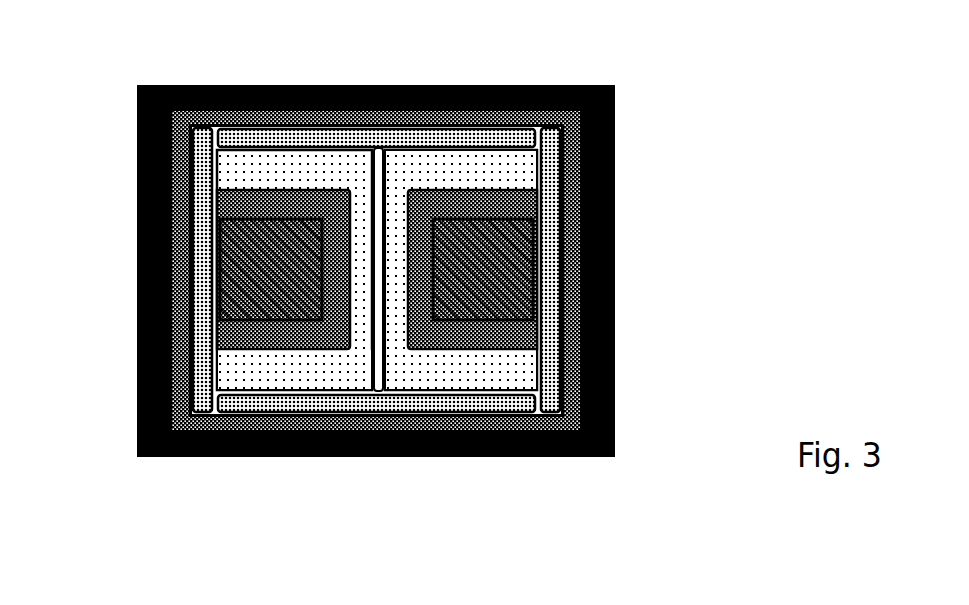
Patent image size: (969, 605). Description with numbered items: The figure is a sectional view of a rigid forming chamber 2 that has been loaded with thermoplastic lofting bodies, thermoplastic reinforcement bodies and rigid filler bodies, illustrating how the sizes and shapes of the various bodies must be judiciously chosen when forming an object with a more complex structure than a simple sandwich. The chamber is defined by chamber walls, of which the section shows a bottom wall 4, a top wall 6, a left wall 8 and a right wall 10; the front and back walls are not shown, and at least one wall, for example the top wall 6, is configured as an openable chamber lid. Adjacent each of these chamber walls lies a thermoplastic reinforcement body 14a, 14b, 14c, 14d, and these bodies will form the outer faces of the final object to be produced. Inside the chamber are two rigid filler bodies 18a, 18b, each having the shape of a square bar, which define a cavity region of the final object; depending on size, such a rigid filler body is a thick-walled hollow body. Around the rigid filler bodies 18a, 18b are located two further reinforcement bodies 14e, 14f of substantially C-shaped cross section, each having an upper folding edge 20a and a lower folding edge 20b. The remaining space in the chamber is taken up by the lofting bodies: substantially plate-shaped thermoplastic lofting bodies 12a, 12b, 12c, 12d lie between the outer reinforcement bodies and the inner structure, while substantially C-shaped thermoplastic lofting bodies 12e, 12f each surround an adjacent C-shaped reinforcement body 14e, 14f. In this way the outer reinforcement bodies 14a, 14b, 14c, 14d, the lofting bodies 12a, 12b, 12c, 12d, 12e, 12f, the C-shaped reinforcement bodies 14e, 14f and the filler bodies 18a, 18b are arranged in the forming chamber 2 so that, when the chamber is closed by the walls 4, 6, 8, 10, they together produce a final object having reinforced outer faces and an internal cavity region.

The rigid forming chamber 2 is at (435, 291).
The bottom wall 4 is at (315, 450).
The top wall 6 is at (287, 95).
The left wall 8 is at (150, 270).
The right wall 10 is at (598, 237).
The plate-shaped thermoplastic lofting body 12a is at (203, 372).
The plate-shaped thermoplastic lofting body 12b is at (552, 312).
The plate-shaped thermoplastic lofting body 12c is at (297, 403).
The plate-shaped thermoplastic lofting body 12d is at (470, 137).
The C-shaped thermoplastic lofting body 12e is at (238, 372).
The C-shaped thermoplastic lofting body 12f is at (460, 373).
The thermoplastic reinforcement body 14a is at (178, 307).
The thermoplastic reinforcement body 14b is at (574, 283).
The thermoplastic reinforcement body 14c is at (408, 428).
The thermoplastic reinforcement body 14d is at (367, 114).
The C-shaped reinforcement body 14e is at (268, 327).
The C-shaped reinforcement body 14f is at (503, 347).
The rigid filler body 18a is at (260, 260).
The rigid filler body 18b is at (505, 252).
The upper folding edge 20a is at (408, 190).
The lower folding edge 20b is at (415, 350).